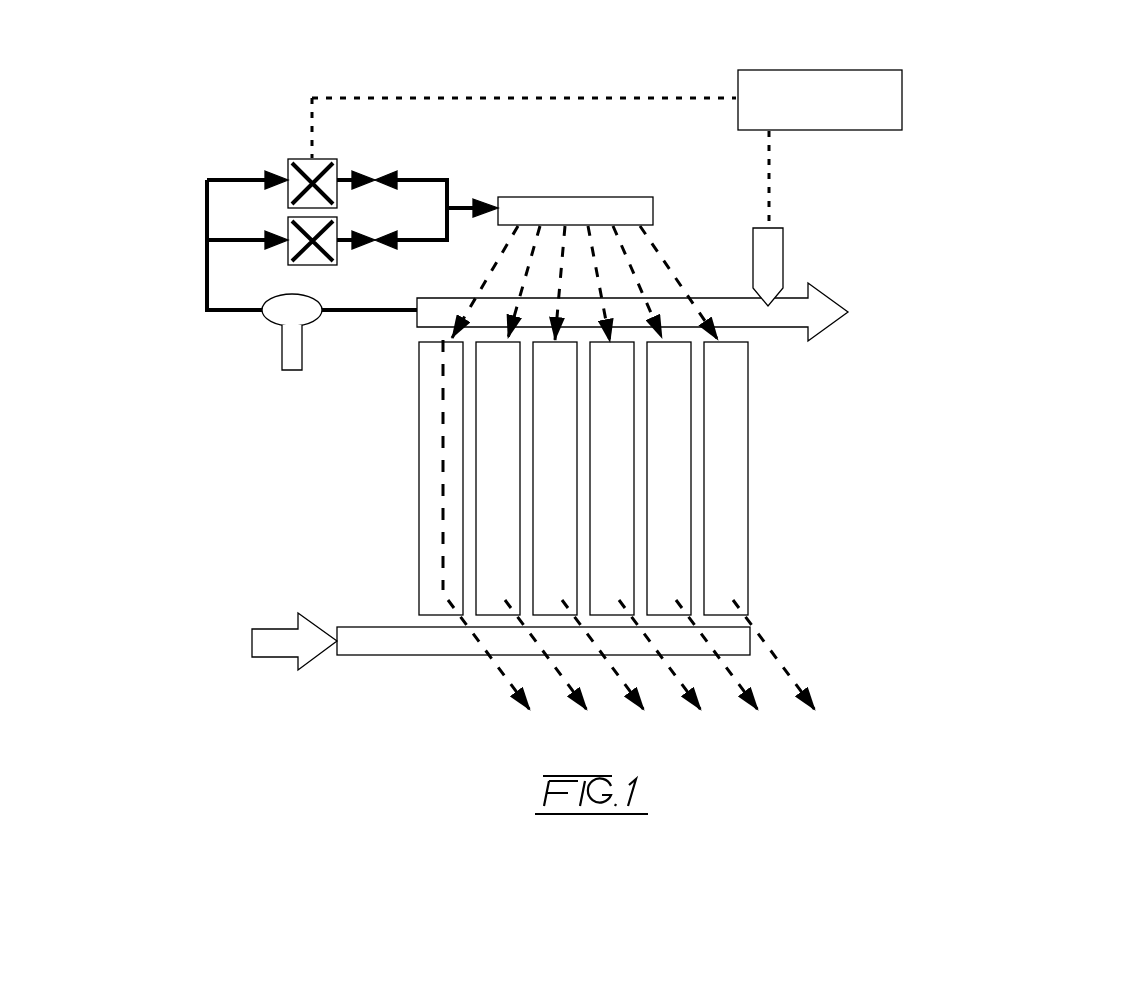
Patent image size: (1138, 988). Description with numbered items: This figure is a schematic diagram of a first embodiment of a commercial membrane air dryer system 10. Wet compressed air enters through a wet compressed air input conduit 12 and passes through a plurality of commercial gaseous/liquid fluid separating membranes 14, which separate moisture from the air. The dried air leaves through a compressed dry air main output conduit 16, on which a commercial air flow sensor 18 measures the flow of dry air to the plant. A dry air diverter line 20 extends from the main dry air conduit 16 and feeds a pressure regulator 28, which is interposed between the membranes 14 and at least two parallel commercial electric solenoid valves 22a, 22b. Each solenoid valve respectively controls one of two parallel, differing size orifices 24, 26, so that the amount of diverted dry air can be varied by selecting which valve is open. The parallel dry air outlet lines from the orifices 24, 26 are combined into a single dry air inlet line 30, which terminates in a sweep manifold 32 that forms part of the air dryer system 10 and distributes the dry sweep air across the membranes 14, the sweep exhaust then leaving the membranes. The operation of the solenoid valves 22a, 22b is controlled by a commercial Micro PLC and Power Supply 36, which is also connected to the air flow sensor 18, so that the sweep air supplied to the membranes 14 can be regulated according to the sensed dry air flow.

The air dryer system 10 is at (535, 63).
The wet compressed air input conduit 12 is at (380, 656).
The gaseous/liquid fluid separating membranes 14 is at (545, 527).
The compressed dry air main output conduit 16 is at (769, 328).
The air flow sensor 18 is at (783, 270).
The dry air diverter line 20 is at (366, 310).
The electric solenoid valve 22a is at (318, 159).
The electric solenoid valve 22b is at (308, 265).
The orifice 24 is at (393, 186).
The orifice 26 is at (396, 238).
The pressure regulator 28 is at (291, 371).
The dry air inlet line 30 is at (458, 205).
The sweep manifold 32 is at (653, 211).
The Micro PLC and Power Supply 36 is at (826, 70).